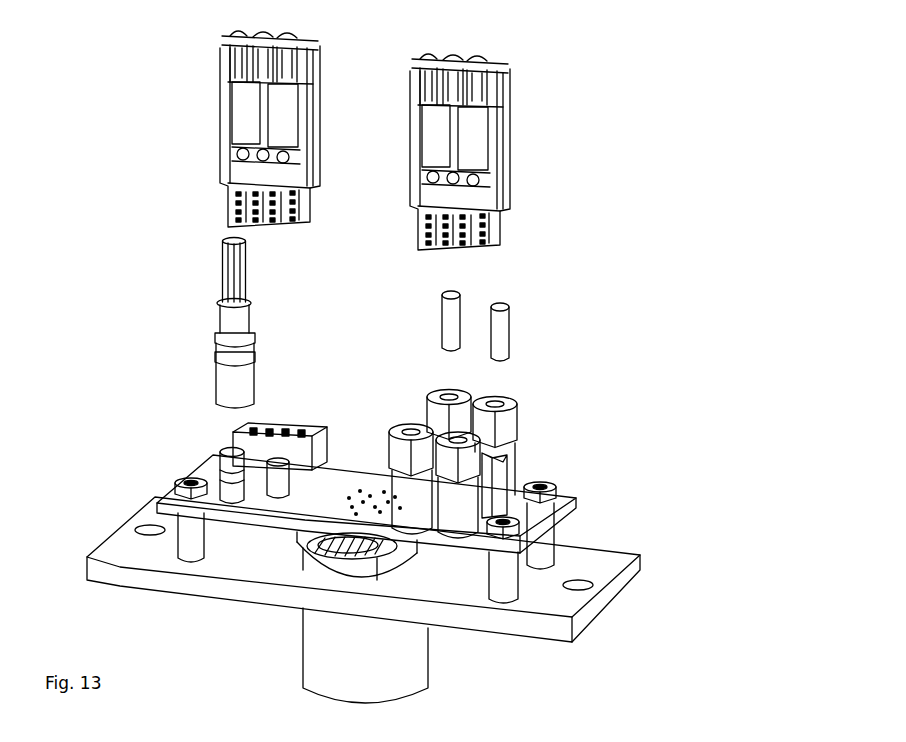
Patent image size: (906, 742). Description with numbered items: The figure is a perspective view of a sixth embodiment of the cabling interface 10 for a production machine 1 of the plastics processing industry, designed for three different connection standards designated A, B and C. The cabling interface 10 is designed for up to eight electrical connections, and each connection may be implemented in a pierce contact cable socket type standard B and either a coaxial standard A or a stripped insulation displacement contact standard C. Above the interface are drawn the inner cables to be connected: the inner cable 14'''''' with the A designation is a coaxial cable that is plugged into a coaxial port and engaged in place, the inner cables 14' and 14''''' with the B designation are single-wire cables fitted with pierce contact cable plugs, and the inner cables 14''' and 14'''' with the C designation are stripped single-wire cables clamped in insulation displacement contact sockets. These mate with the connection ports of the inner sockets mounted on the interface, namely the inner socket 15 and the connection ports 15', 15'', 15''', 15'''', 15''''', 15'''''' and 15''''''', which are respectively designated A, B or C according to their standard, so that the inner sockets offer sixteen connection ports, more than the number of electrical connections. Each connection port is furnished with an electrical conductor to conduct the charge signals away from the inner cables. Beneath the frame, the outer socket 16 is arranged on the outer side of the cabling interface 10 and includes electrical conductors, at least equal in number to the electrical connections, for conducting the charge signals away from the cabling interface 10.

The production machine 1 is at (643, 287).
The cabling interface 10 is at (643, 287).
The inner cable 14' is at (498, 152).
The inner cable 14''' is at (557, 332).
The inner cable 14'''' is at (391, 316).
The inner cable 14''''' is at (212, 129).
The inner cable 14'''''' is at (169, 323).
The inner socket 15 is at (277, 393).
The connection port of inner socket 15' is at (462, 438).
The connection port of inner socket 15'' is at (501, 403).
The connection port of inner socket 15''' is at (548, 443).
The connection port of inner socket 15'''' is at (541, 485).
The connection port of inner socket 15''''' is at (447, 547).
The connection port of inner socket 15'''''' is at (212, 523).
The connection port of inner socket 15''''''' is at (163, 466).
The outer socket 16 is at (322, 670).